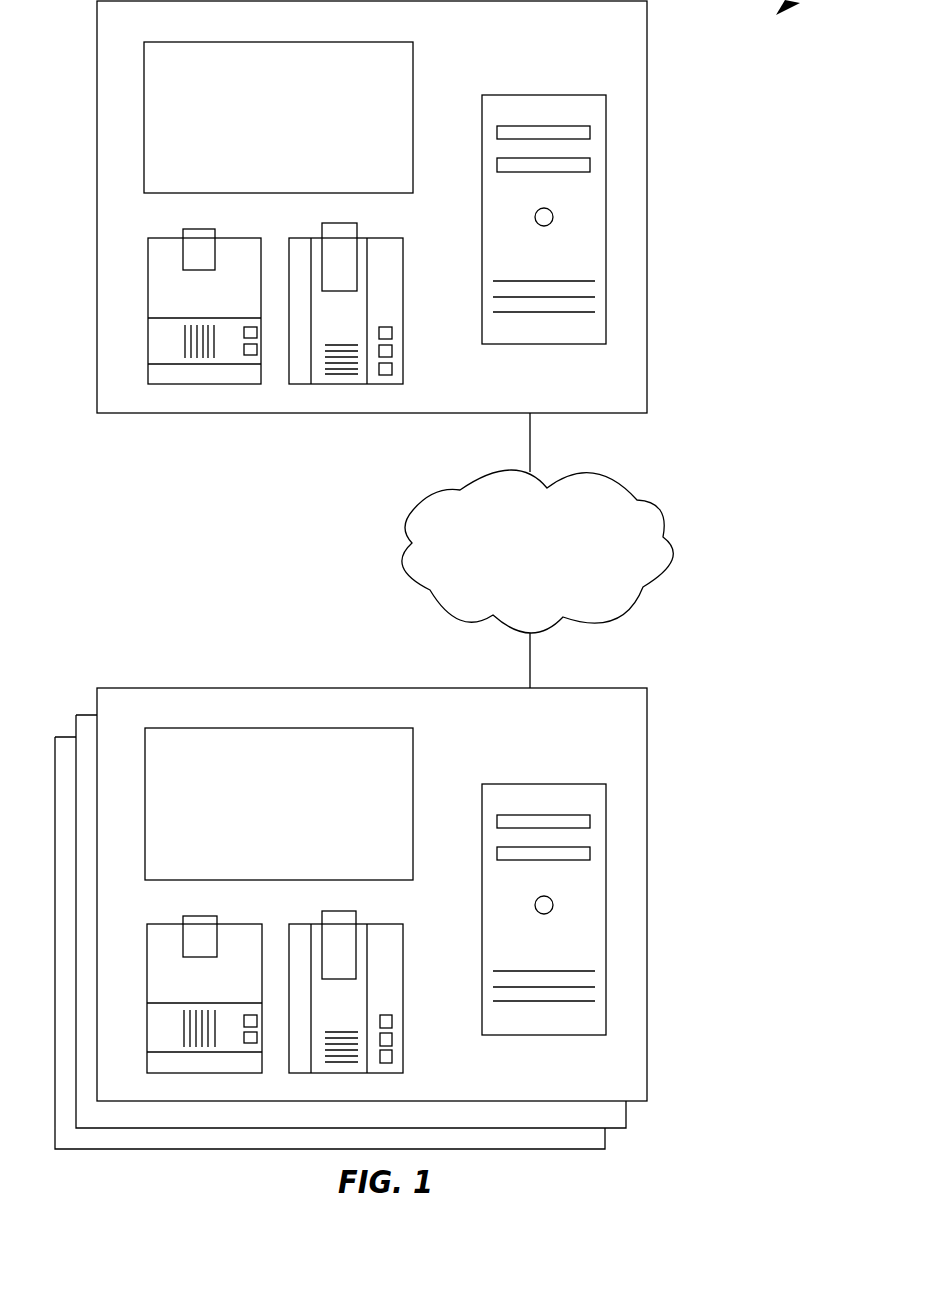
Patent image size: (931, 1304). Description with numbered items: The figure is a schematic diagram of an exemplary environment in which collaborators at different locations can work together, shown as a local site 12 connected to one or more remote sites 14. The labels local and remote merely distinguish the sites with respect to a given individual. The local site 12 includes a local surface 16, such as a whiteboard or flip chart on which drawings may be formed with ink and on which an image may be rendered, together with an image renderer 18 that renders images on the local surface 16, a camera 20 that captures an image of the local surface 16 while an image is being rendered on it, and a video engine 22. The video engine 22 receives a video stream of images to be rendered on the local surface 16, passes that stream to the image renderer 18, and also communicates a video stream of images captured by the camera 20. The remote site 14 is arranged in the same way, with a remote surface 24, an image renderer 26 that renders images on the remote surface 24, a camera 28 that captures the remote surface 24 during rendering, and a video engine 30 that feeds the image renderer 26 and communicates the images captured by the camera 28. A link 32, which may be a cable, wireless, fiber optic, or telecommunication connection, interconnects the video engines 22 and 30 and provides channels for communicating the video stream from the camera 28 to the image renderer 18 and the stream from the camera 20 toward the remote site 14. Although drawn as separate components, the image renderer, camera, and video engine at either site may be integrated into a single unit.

The local site 12 is at (97, 68).
The remote site 14 is at (117, 687).
The local surface 16 is at (400, 110).
The image renderer 18 is at (392, 300).
The camera 20 is at (165, 300).
The video engine 22 is at (578, 115).
The remote surface 24 is at (404, 787).
The image renderer 26 is at (387, 978).
The camera 28 is at (163, 978).
The video engine 30 is at (578, 793).
The link 32 is at (420, 522).